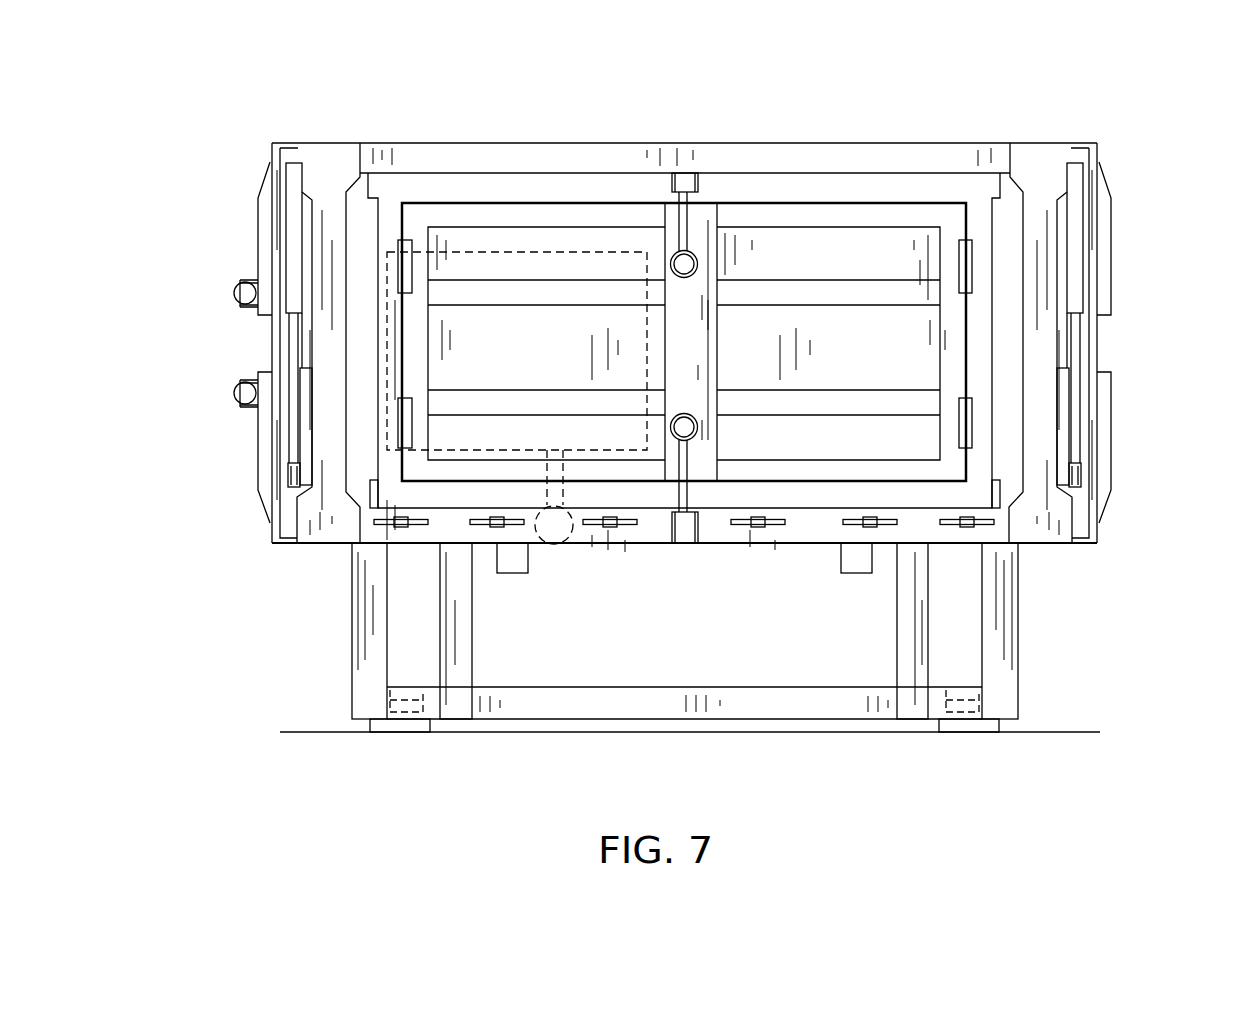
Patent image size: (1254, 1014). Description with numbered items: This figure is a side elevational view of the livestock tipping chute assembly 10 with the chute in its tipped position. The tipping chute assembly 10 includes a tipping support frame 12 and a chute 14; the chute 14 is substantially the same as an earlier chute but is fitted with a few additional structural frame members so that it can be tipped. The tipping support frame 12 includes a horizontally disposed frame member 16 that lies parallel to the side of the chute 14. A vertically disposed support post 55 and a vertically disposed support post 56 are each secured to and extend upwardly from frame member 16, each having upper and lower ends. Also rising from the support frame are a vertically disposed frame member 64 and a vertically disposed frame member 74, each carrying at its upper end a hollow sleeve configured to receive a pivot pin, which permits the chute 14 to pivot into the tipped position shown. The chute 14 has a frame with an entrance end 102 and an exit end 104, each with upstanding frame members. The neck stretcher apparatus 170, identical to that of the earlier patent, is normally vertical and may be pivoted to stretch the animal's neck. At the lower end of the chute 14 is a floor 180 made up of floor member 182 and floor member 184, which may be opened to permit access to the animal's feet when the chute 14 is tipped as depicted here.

The livestock tipping chute assembly 10 is at (985, 100).
The tipping support frame 12 is at (630, 752).
The chute 14 is at (730, 148).
The horizontally disposed frame member 16 is at (768, 715).
The support post 55 is at (893, 608).
The support post 56 is at (478, 625).
The vertically disposed frame member 64 is at (1010, 618).
The vertically disposed frame member 74 is at (368, 623).
The entrance end 102 is at (1138, 297).
The exit end 104 is at (240, 348).
The neck stretcher apparatus 170 is at (215, 287).
The floor 180 is at (838, 190).
The floor member 182 is at (553, 215).
The floor member 184 is at (922, 233).